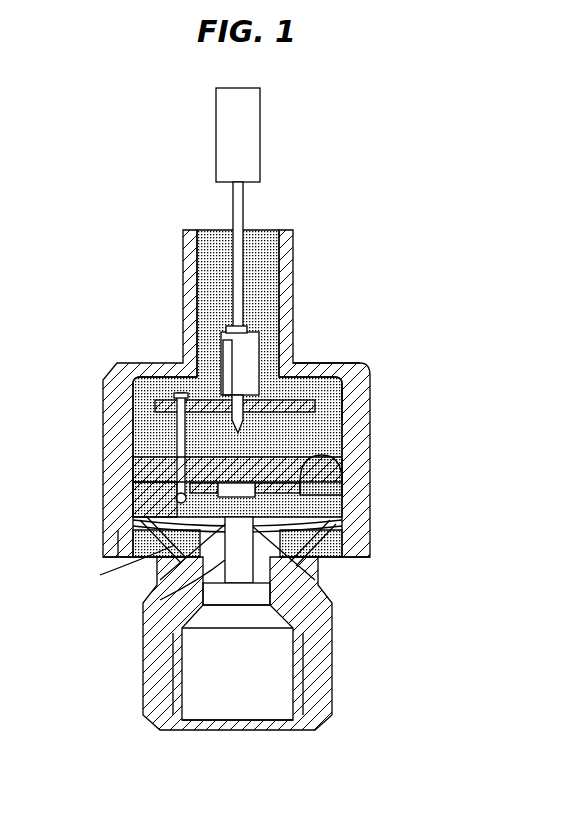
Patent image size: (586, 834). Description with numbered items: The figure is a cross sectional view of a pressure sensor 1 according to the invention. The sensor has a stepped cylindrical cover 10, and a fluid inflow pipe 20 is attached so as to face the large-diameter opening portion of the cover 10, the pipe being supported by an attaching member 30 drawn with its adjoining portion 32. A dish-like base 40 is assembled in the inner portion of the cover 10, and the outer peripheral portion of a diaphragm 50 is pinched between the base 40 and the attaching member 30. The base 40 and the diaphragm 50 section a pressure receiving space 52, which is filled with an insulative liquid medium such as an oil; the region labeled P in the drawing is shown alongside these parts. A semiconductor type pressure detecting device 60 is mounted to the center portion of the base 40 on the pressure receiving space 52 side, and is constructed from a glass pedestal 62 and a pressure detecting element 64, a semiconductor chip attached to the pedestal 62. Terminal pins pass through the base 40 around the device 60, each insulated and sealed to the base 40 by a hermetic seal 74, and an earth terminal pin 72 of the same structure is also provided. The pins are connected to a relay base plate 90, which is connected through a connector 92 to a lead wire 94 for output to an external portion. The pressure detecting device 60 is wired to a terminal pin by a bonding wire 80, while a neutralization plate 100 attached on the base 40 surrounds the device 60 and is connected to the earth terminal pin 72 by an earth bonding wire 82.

The pressure sensor 1 is at (235, 409).
The stepped cylindrical cover 10 is at (360, 418).
The fluid inflow pipe 20 is at (325, 672).
The attaching member 30 is at (200, 560).
The support arm 32 is at (210, 568).
The base 40 is at (325, 483).
The diaphragm 50 is at (195, 557).
The pressure receiving space 52 is at (352, 548).
The semiconductor type pressure detecting device 60 is at (330, 570).
The pedestal 62 is at (345, 402).
The pressure detecting element 64 is at (195, 580).
The earth terminal pin 72 is at (180, 428).
The hermetic seal 74 is at (165, 472).
The bonding wire 80 is at (195, 527).
The earth bonding wire 82 is at (182, 508).
The relay base plate 90 is at (350, 378).
The connector 92 is at (230, 348).
The lead wire 94 is at (243, 201).
The neutralization plate 100 is at (340, 457).
The potting resin P is at (272, 272).